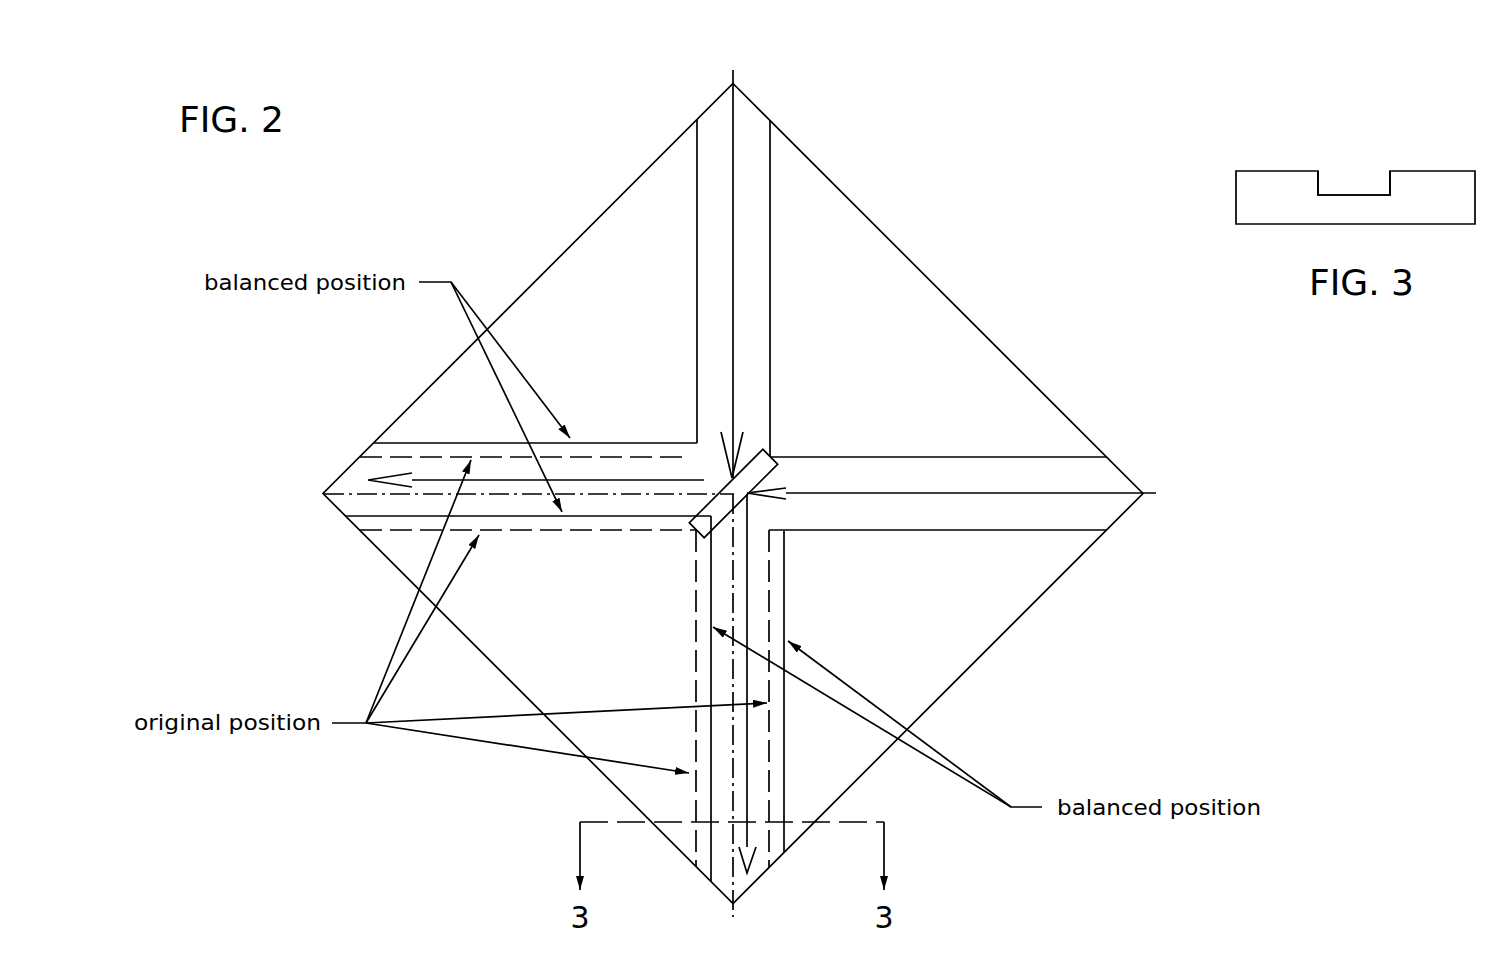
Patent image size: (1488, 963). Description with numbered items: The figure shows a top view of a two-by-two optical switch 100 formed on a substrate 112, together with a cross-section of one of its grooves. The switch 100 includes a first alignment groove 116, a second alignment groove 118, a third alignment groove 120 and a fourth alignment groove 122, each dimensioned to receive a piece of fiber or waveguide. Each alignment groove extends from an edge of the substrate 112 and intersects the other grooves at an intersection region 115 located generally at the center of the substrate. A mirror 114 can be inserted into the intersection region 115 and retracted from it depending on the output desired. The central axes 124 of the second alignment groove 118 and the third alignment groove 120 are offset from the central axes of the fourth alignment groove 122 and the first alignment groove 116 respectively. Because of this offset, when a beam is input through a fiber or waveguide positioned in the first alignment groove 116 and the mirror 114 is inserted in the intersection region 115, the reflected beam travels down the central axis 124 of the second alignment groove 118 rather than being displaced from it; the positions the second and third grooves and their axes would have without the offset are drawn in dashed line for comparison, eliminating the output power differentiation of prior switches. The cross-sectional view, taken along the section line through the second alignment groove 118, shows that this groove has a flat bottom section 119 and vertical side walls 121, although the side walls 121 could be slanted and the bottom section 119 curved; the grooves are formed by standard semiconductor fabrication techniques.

In FIG. 2, the switch 100 is at (1046, 282).
In FIG. 2, the substrate 112 is at (846, 268).
In FIG. 2, the mirror 114 is at (745, 478).
In FIG. 2, the intersection region 115 is at (729, 460).
In FIG. 2, the first alignment groove 116 is at (1011, 455).
In FIG. 2, the second alignment groove 118 is at (795, 570).
In FIG. 2, the third alignment groove 120 is at (411, 440).
In FIG. 2, the fourth alignment groove 122 is at (773, 165).
In FIG. 2, the central axes 124 is at (362, 474).
In FIG. 3, the flat bottom section 119 is at (1354, 190).
In FIG. 3, the vertical side walls 121 is at (1323, 174).